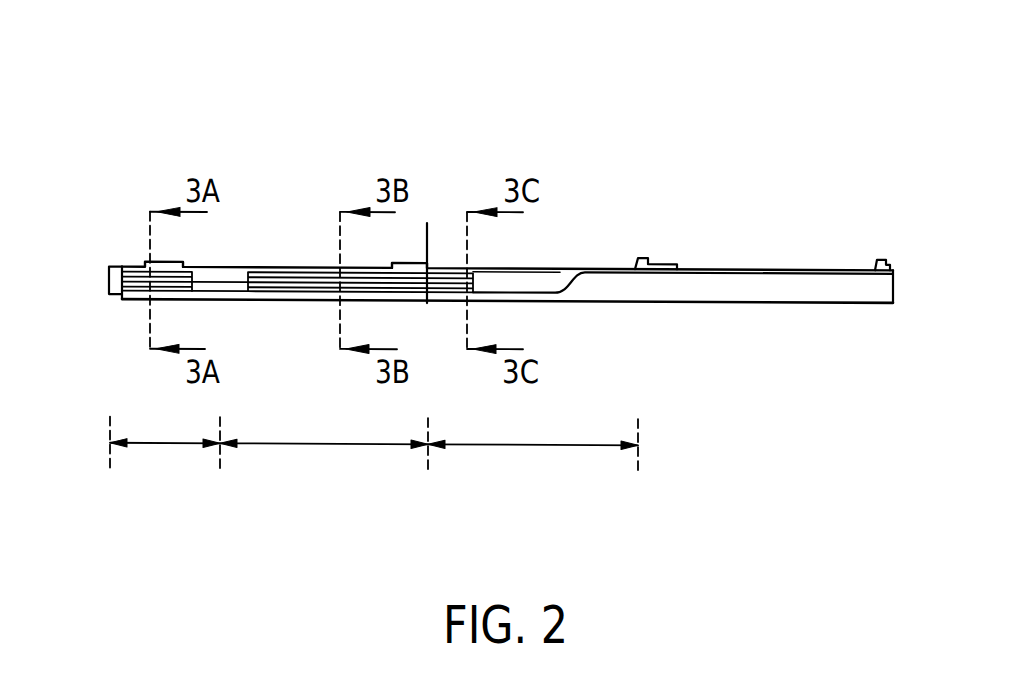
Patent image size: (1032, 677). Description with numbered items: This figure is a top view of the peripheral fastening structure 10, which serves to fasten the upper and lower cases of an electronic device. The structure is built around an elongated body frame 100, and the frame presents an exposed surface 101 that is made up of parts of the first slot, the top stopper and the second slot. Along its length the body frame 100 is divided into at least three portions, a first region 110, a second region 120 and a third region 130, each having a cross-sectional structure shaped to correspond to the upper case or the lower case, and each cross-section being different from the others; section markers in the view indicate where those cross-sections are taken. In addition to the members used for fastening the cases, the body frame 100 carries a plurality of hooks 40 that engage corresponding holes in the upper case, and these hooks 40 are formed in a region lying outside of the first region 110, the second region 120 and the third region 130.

The peripheral fastening structure 10 is at (140, 146).
The body frame 100 is at (520, 280).
The exposed surface 101 is at (623, 280).
The hook 40 is at (640, 255).
The first region 110 is at (167, 445).
The second region 120 is at (322, 445).
The third region 130 is at (520, 444).